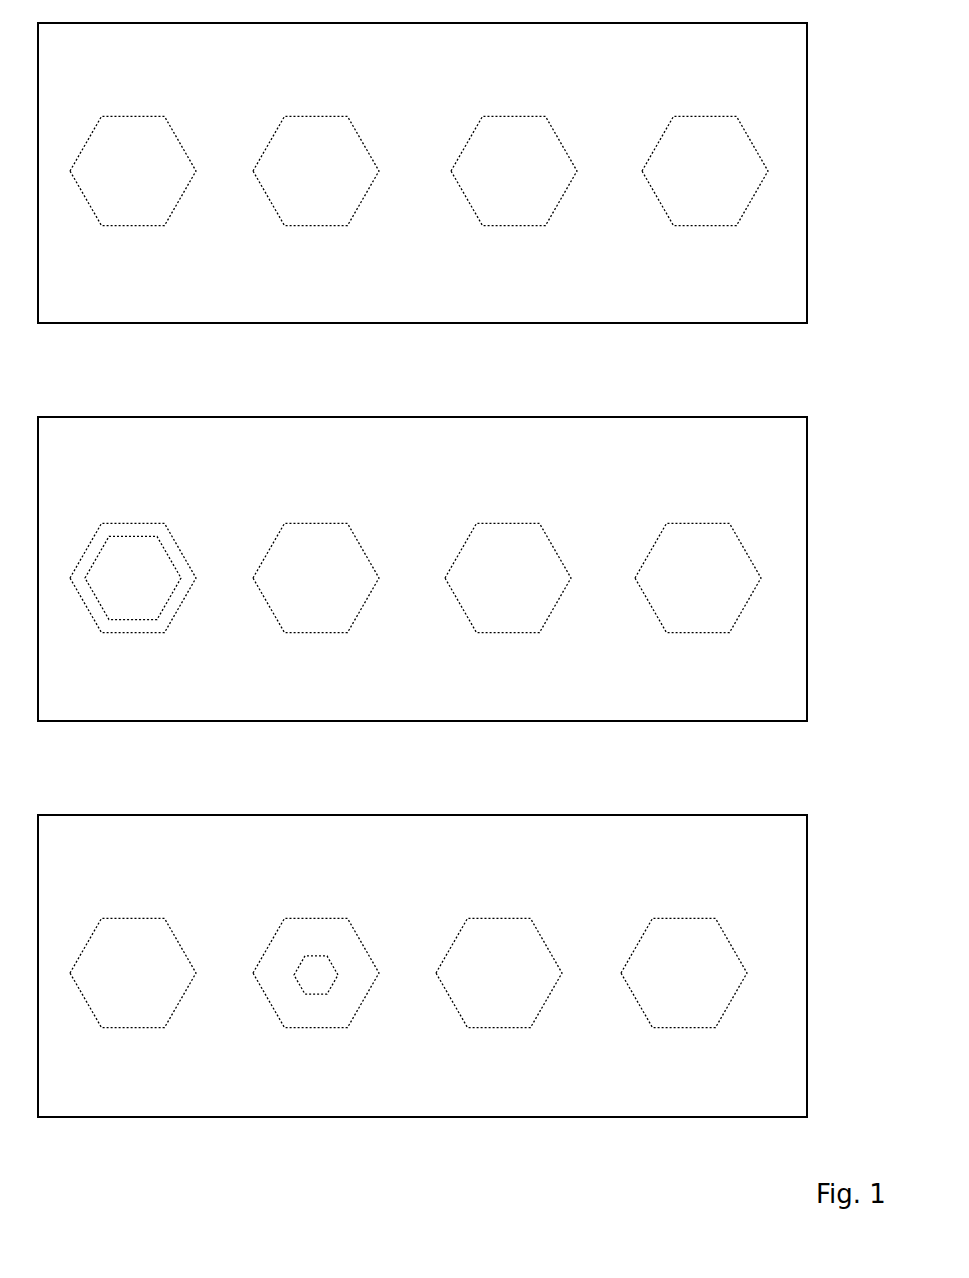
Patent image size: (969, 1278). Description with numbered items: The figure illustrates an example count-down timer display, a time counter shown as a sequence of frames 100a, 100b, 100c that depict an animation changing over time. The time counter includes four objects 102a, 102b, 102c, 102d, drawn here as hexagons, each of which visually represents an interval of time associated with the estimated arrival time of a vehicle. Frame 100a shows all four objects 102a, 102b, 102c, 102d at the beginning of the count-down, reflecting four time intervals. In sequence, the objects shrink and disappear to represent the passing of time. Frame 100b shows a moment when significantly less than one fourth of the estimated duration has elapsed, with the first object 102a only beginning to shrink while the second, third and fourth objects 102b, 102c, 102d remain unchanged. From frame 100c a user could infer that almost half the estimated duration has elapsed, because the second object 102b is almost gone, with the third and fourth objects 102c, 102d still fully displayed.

The frame 100a is at (422, 173).
The frame 100b is at (422, 569).
The frame 100c is at (422, 966).
The first object 102a is at (198, 657).
The second object 102b is at (277, 1052).
The third object 102c is at (506, 571).
The fourth object 102d is at (694, 571).